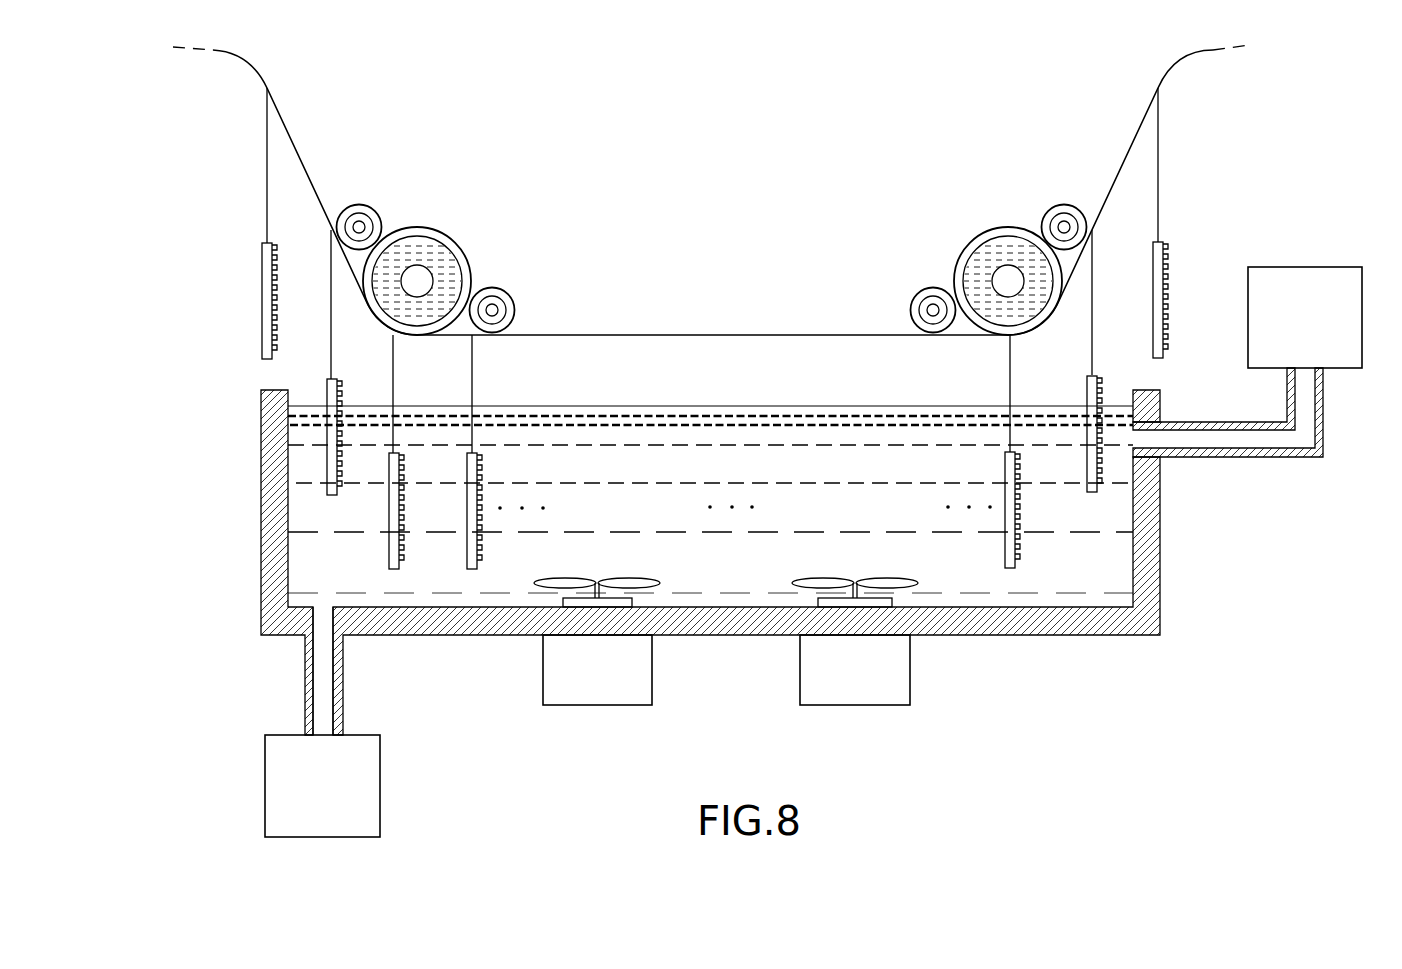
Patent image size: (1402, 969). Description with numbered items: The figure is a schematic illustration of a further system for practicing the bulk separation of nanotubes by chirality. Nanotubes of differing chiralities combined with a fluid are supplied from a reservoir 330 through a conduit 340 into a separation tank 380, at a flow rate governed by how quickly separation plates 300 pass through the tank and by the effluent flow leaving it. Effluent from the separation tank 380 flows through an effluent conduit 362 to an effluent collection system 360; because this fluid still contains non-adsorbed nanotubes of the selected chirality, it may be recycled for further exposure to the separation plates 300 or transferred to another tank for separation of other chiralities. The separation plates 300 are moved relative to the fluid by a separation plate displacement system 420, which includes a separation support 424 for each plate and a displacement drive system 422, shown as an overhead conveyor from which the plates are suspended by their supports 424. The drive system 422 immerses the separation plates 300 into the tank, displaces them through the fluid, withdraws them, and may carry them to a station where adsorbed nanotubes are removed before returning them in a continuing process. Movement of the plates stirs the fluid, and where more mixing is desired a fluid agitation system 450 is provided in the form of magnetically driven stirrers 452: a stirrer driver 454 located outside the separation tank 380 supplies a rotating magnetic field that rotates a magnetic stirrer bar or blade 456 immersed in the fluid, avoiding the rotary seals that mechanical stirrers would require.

The separation plate 300 is at (262, 306).
The reservoir 330 is at (1343, 368).
The conduit 340 is at (1228, 457).
The effluent collection system 360 is at (380, 785).
The effluent conduit 362 is at (343, 688).
The separation tank 380 is at (1160, 545).
The separation plate displacement system 420 is at (711, 190).
The displacement drive system 422 is at (658, 333).
The separation support 424 is at (472, 365).
The fluid agitation system 450 is at (749, 658).
The magnetically driven stirrer 452 is at (680, 673).
The stirrer driver 454 is at (543, 657).
The magnetic stirrer bar or blade 456 is at (663, 578).